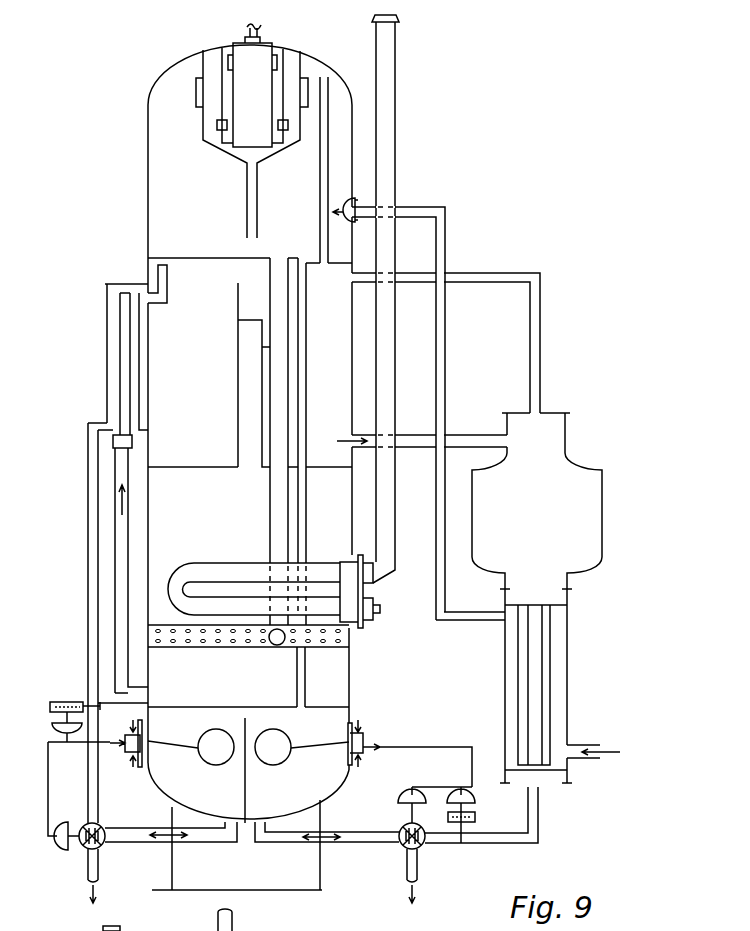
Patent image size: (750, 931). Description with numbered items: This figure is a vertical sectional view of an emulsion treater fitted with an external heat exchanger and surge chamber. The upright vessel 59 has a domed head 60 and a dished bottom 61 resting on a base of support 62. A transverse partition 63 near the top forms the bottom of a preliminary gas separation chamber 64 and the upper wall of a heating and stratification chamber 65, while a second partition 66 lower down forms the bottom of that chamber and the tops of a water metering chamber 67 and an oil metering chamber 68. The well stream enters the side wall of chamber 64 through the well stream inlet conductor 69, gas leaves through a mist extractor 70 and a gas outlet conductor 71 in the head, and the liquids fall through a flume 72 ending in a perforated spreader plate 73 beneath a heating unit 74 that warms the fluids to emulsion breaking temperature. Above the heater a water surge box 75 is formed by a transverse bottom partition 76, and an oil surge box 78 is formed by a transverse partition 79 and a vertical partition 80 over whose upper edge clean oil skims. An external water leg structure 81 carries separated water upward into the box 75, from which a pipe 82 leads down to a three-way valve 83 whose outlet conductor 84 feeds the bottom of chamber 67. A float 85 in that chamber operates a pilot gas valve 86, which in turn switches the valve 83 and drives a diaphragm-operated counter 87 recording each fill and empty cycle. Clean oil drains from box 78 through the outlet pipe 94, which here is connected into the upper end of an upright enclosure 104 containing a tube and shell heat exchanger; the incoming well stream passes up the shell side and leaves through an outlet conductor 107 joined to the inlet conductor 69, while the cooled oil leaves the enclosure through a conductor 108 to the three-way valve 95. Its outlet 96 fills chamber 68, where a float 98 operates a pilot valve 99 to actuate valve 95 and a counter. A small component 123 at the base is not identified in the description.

The upright vessel 59 is at (148, 124).
The domed head 60 is at (165, 73).
The dished bottom 61 is at (151, 781).
The base of support 62 is at (190, 886).
The transverse partition 63 is at (223, 254).
The preliminary gas separation chamber 64 is at (202, 189).
The heating and stratification chamber 65 is at (230, 524).
The second partition 66 is at (244, 690).
The water metering chamber 67 is at (215, 770).
The oil metering chamber 68 is at (270, 786).
The well stream inlet conductor 69 is at (418, 210).
The mist extractor 70 is at (217, 129).
The gas outlet conductor 71 is at (245, 32).
The flume 72 is at (282, 372).
The perforated spreader plate 73 is at (238, 646).
The heating unit 74 is at (250, 563).
The water surge box 75 is at (188, 357).
The transverse bottom partition 76 is at (207, 459).
The oil surge box 78 is at (314, 482).
The transverse partition 79 is at (337, 459).
The vertical partition 80 is at (263, 347).
The external water leg structure 81 is at (120, 566).
The pipe 82 is at (88, 547).
The three-way valve 83 is at (88, 848).
The outlet conductor 84 is at (146, 822).
The float 85 is at (212, 737).
The pilot gas valve 86 is at (130, 737).
The diaphragm-operated counter 87 is at (78, 689).
The clean oil outlet pipe 94 is at (484, 433).
The three-way valve 95 is at (424, 848).
The outlet 96 is at (350, 833).
The float 98 is at (285, 738).
The pilot valve 99 is at (365, 742).
The upright enclosure 104 is at (597, 493).
The outlet conductor 107 is at (478, 622).
The conductor 108 is at (487, 847).
The element 123 is at (231, 921).